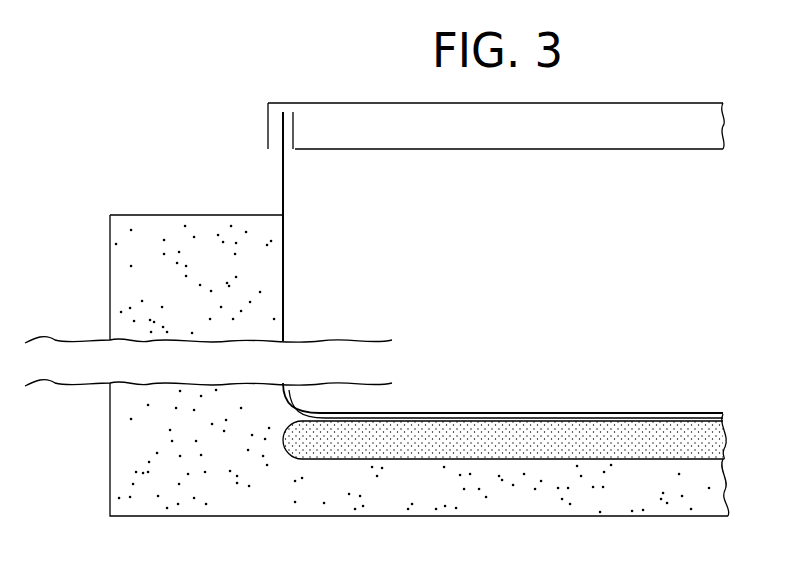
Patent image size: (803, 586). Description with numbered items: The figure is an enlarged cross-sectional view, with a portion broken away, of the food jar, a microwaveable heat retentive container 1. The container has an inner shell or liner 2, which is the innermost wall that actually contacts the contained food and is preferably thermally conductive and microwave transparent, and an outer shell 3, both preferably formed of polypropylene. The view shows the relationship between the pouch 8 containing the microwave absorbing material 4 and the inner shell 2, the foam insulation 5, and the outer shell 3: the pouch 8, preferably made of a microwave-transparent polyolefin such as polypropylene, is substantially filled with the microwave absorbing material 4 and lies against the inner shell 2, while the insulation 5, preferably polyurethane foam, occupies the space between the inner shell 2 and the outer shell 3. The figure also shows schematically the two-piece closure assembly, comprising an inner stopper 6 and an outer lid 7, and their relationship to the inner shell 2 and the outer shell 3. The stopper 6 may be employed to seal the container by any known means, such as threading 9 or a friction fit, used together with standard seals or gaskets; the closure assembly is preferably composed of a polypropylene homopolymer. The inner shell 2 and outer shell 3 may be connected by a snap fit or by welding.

The microwaveable heat retentive container 1 is at (231, 124).
The inner shell 2 is at (283, 297).
The outer shell 3 is at (110, 310).
The microwave absorbing material 4 is at (600, 428).
The insulation 5 is at (160, 268).
The inner stopper 6 is at (578, 149).
The outer lid 7 is at (515, 104).
The pouch 8 is at (502, 459).
The threading 9 is at (288, 158).